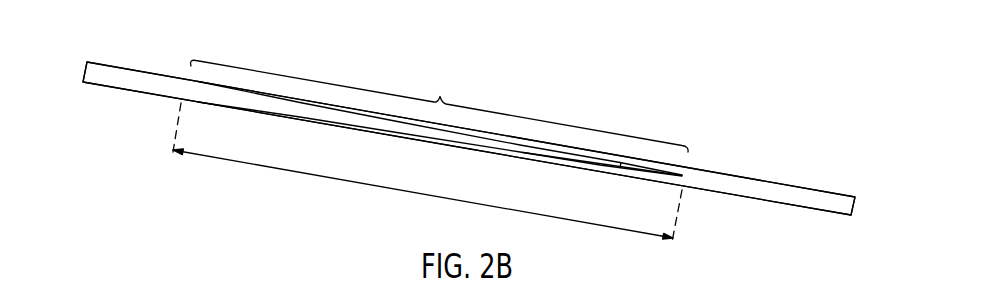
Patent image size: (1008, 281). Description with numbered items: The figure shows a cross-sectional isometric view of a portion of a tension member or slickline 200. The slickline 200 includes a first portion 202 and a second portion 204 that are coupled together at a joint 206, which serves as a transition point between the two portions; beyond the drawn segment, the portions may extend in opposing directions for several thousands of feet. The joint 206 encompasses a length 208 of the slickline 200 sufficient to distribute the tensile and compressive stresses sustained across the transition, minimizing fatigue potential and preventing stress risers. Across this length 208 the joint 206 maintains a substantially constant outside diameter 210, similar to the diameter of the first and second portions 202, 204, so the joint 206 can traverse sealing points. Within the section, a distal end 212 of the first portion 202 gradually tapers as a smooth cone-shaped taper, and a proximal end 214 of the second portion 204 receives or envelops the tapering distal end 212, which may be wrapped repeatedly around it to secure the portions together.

The slickline 200 is at (631, 83).
The first portion 202 is at (123, 64).
The second portion 204 is at (730, 170).
The joint 206 is at (422, 116).
The length 208 is at (372, 187).
The outside diameter 210 is at (417, 144).
The distal end 212 is at (523, 150).
The proximal end 214 is at (349, 129).